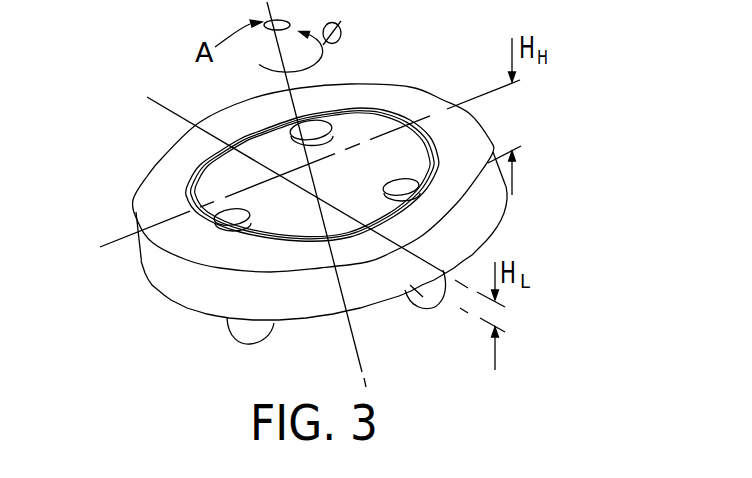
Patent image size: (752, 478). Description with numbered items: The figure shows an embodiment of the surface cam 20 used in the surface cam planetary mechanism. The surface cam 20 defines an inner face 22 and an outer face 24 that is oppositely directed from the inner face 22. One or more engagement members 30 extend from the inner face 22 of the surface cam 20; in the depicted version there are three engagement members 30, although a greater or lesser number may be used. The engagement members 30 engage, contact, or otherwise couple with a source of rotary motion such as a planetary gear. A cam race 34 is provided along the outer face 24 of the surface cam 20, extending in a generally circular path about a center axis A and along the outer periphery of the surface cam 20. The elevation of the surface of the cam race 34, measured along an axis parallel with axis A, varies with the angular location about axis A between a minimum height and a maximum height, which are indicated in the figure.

The surface cam 20 is at (534, 141).
The inner face 22 is at (483, 228).
The outer face 24 is at (367, 143).
The engagement members 30 is at (238, 328).
The cam race 34 is at (178, 172).